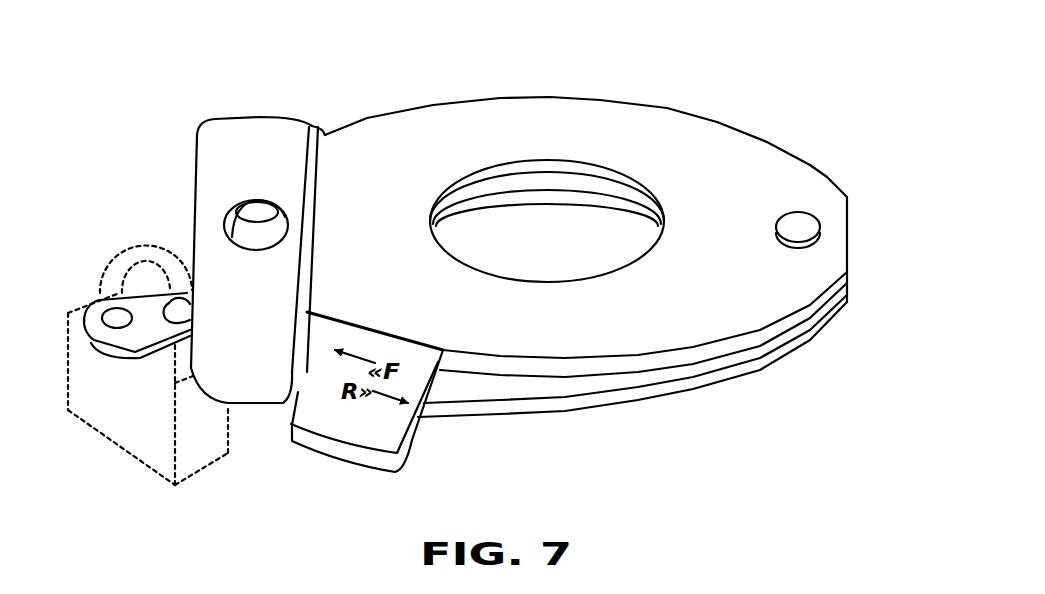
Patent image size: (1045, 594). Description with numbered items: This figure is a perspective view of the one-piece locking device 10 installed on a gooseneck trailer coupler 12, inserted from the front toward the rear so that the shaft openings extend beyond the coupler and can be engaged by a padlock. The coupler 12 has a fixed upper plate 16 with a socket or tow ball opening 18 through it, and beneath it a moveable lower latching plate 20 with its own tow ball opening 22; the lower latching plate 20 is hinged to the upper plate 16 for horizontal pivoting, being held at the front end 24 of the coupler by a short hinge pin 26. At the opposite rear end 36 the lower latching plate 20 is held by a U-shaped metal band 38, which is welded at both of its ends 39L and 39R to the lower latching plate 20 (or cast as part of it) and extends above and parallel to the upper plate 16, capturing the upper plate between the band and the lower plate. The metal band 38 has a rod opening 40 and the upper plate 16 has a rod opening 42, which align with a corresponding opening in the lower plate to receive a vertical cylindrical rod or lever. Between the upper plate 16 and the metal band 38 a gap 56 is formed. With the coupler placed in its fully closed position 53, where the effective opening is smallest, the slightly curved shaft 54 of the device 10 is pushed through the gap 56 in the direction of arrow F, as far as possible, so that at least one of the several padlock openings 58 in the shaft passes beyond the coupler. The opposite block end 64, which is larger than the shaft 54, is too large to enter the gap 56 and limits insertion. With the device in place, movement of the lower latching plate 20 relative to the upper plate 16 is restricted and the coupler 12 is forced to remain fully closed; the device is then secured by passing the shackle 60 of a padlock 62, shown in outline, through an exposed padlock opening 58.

The locking device 10 is at (379, 467).
The gooseneck trailer coupler 12 is at (735, 185).
The fixed upper plate 16 is at (638, 345).
The tow ball opening 18 is at (566, 166).
The lower latching plate 20 is at (505, 399).
The tow ball opening 22 is at (525, 196).
The front end 24 is at (853, 243).
The hinge pin 26 is at (806, 213).
The rear end 36 is at (197, 228).
The metal band 38 is at (233, 135).
The end of metal band 39L is at (276, 116).
The end of metal band 39R is at (258, 410).
The rod opening 40 is at (230, 223).
The rod opening 42 is at (245, 209).
The fully closed position 53 is at (670, 105).
The shaft 54 is at (147, 298).
The gap 56 is at (311, 373).
The padlock openings 58 is at (183, 310).
The shackle 60 is at (130, 258).
The padlock 62 is at (152, 457).
The block end 64 is at (393, 444).